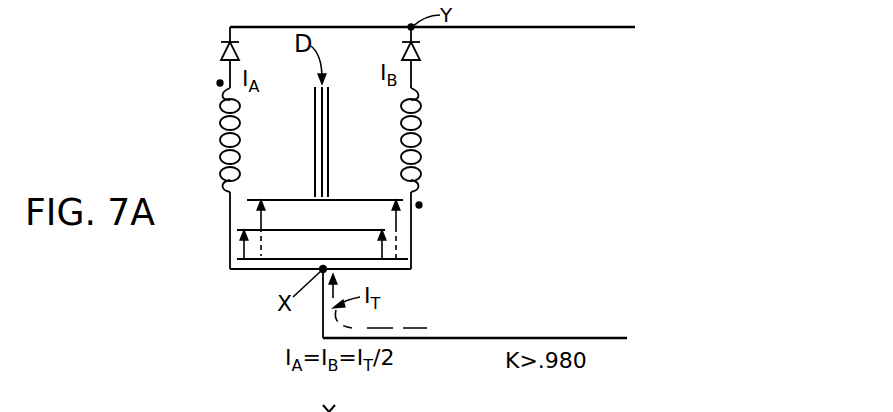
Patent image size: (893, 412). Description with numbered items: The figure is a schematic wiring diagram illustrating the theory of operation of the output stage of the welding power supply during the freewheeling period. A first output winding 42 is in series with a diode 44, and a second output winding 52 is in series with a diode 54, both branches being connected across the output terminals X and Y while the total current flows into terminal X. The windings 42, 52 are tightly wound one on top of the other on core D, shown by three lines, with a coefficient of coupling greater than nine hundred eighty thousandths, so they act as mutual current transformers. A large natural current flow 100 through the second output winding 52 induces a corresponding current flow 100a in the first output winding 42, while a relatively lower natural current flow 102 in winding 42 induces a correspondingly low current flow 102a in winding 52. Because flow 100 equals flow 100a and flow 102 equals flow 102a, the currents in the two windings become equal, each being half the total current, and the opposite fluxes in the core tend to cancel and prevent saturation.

The first output winding 42 is at (214, 111).
The diode 44 is at (219, 54).
The second output winding 52 is at (430, 109).
The diode 54 is at (416, 56).
The large current flow 100 is at (400, 224).
The induced current flow 100a is at (259, 222).
The lower natural current flow 102 is at (243, 251).
The induced low current flow 102a is at (385, 258).